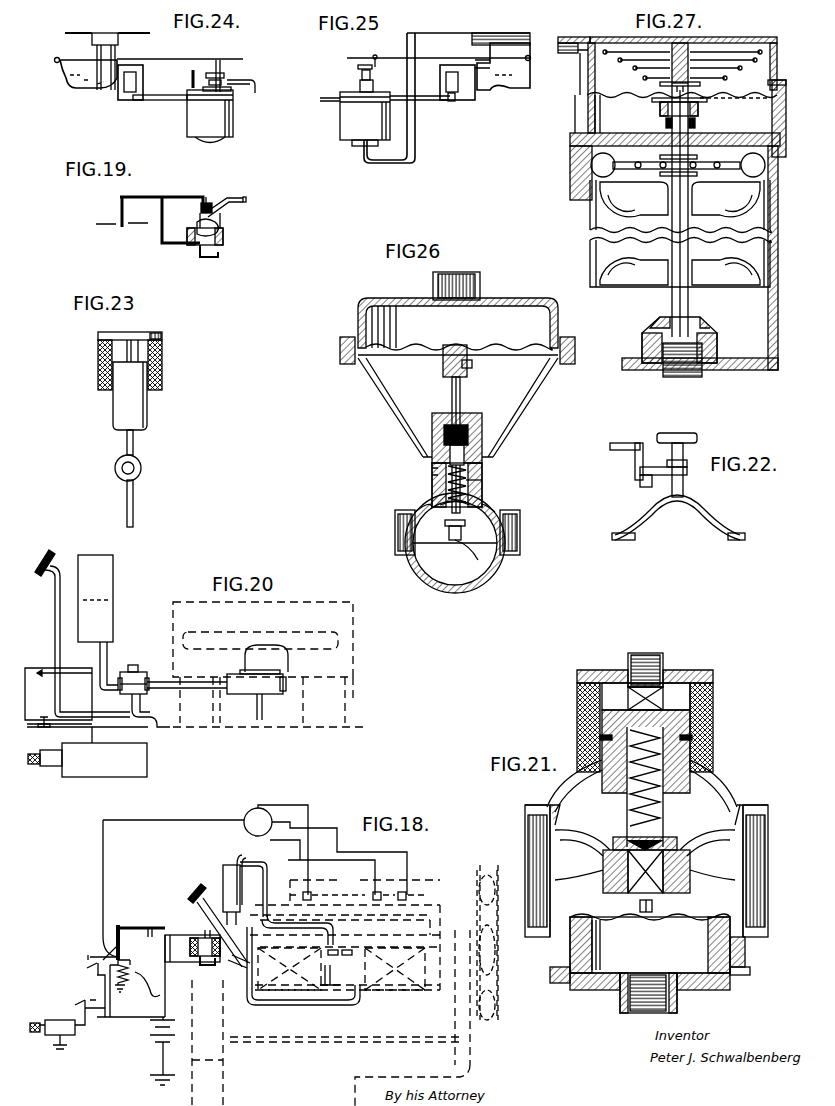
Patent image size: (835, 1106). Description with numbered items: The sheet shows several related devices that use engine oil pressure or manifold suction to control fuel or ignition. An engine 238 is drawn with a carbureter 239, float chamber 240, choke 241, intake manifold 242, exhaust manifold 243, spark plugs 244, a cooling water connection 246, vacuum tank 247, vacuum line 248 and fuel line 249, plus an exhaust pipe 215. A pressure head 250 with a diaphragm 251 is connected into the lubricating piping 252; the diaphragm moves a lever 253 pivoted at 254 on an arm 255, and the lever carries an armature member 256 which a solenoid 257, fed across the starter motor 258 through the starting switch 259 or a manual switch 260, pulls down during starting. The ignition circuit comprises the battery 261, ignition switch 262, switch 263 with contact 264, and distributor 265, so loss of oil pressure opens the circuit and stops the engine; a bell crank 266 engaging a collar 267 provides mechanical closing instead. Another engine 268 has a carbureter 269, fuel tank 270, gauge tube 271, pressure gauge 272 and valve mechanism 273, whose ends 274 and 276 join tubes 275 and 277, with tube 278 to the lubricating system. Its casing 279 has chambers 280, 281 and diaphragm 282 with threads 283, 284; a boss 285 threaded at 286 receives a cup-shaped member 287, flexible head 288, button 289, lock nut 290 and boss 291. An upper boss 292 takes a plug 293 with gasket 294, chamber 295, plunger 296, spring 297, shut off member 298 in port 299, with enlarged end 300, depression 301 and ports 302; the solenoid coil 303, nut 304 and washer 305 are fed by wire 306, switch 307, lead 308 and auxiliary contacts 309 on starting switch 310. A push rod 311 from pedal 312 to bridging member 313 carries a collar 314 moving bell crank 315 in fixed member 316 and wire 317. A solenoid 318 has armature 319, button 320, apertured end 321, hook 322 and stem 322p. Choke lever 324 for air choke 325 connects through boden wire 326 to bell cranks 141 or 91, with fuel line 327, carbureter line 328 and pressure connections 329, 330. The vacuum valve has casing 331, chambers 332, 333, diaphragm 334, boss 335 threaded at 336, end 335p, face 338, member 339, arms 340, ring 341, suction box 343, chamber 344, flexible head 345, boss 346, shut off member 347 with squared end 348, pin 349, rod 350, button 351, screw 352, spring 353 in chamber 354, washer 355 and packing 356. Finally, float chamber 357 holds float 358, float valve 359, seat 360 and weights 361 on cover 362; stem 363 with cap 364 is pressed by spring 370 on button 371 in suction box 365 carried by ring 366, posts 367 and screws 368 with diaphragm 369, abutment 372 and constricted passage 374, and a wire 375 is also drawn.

In FIG. 25, the bell crank 91 is at (378, 66).
In FIG. 24, the bell crank 141 is at (222, 68).
In FIG. 21, the exhaust pipe 215 is at (496, 865).
In FIG. 18, the exhaust pipe 215 is at (485, 940).
In FIG. 18, the engine 238 is at (331, 1005).
In FIG. 18, the carbureter 239 is at (333, 955).
In FIG. 18, the float chamber 240 is at (365, 975).
In FIG. 18, the choke 241 is at (327, 990).
In FIG. 18, the intake manifold 242 is at (395, 948).
In FIG. 18, the exhaust manifold 243 is at (345, 926).
In FIG. 18, the spark plugs 244 is at (312, 897).
In FIG. 18, the connection for the cooling water 246 is at (428, 865).
In FIG. 18, the vacuum tank 247 is at (225, 865).
In FIG. 18, the vacuum line 248 is at (240, 858).
In FIG. 18, the fuel line 249 is at (258, 1005).
In FIG. 19, the pressure head 250 is at (223, 240).
In FIG. 18, the pressure head 250 is at (200, 964).
In FIG. 19, the diaphragm 251 is at (198, 226).
In FIG. 18, the diaphragm 251 is at (205, 930).
In FIG. 18, the piping 252 is at (240, 968).
In FIG. 19, the lever 253 is at (188, 196).
In FIG. 18, the lever 253 is at (180, 935).
In FIG. 19, the pivot 254 is at (158, 196).
In FIG. 18, the pivot 254 is at (150, 928).
In FIG. 19, the arm 255 is at (162, 243).
In FIG. 18, the arm 255 is at (150, 928).
In FIG. 18, the contact carrying armature member 256 is at (107, 930).
In FIG. 18, the solenoid 257 is at (130, 985).
In FIG. 18, the starter motor 258 is at (75, 1030).
In FIG. 18, the starting switch 259 is at (75, 1005).
In FIG. 18, the manually controlled switch 260 is at (92, 970).
In FIG. 18, the battery 261 is at (150, 1043).
In FIG. 19, the ignition switch 262 is at (218, 257).
In FIG. 18, the ignition switch 262 is at (165, 1005).
In FIG. 18, the switch 263 is at (88, 956).
In FIG. 19, the contact 264 is at (118, 215).
In FIG. 18, the contact 264 is at (114, 935).
In FIG. 18, the distributor 265 is at (258, 808).
In FIG. 19, the bell crank 266 is at (232, 208).
In FIG. 19, the collar 267 is at (212, 203).
In FIG. 20, the engine 268 is at (270, 664).
In FIG. 20, the carbureter 269 is at (282, 670).
In FIG. 20, the fuel supply tank 270 is at (95, 598).
In FIG. 20, the tube 271 is at (158, 728).
In FIG. 20, the pressure gauge 272 is at (52, 552).
In FIG. 18, the pressure gauge 272 is at (200, 884).
In FIG. 20, the valve mechanism 273 is at (133, 668).
In FIG. 21, the valve mechanism 273 is at (750, 749).
In FIG. 21, the end 274 is at (535, 806).
In FIG. 20, the tube 275 is at (108, 652).
In FIG. 21, the end 276 is at (765, 806).
In FIG. 20, the tube 277 is at (180, 690).
In FIG. 20, the tube 278 is at (140, 702).
In FIG. 21, the casing 279 is at (705, 790).
In FIG. 21, the chamber 280 is at (645, 855).
In FIG. 21, the chamber 281 is at (720, 899).
In FIG. 21, the diaphragm 282 is at (600, 866).
In FIG. 21, the threads 283 is at (526, 830).
In FIG. 21, the threads 284 is at (750, 845).
In FIG. 21, the boss 285 is at (745, 950).
In FIG. 21, the internal threads 286 is at (745, 969).
In FIG. 21, the cup-shaped member 287 is at (690, 990).
In FIG. 21, the flexible head 288 is at (635, 918).
In FIG. 21, the button 289 is at (653, 906).
In FIG. 21, the lock nut 290 is at (552, 980).
In FIG. 21, the internally threaded boss 291 is at (625, 1005).
In FIG. 21, the internally threaded boss 292 is at (713, 735).
In FIG. 21, the plug 293 is at (713, 705).
In FIG. 21, the gasket 294 is at (600, 737).
In FIG. 21, the chamber 295 is at (577, 716).
In FIG. 21, the plunger 296 is at (668, 812).
In FIG. 21, the spring 297 is at (662, 826).
In FIG. 21, the shut off member 298 is at (668, 900).
In FIG. 21, the port 299 is at (625, 890).
In FIG. 21, the enlarged upper end 300 is at (657, 838).
In FIG. 21, the central depression 301 is at (640, 838).
In FIG. 21, the ports 302 is at (627, 812).
In FIG. 21, the solenoid coil 303 is at (713, 690).
In FIG. 21, the nut 304 is at (663, 660).
In FIG. 21, the washer 305 is at (690, 672).
In FIG. 20, the wire 306 is at (85, 670).
In FIG. 20, the switch 307 is at (42, 668).
In FIG. 20, the lead 308 is at (90, 702).
In FIG. 20, the auxiliary contacts 309 is at (40, 717).
In FIG. 20, the starting switch 310 is at (92, 727).
In FIG. 22, the push rod 311 is at (672, 490).
In FIG. 26, the pedal 312 is at (343, 337).
In FIG. 22, the pedal 312 is at (685, 437).
In FIG. 22, the bridging member 313 is at (652, 516).
In FIG. 22, the collar 314 is at (690, 470).
In FIG. 22, the bell crank lever 315 is at (640, 472).
In FIG. 22, the fixed member 316 is at (640, 485).
In FIG. 22, the push rod or wire 317 is at (616, 445).
In FIG. 23, the solenoid 318 is at (163, 365).
In FIG. 23, the armature 319 is at (148, 407).
In FIG. 23, the button 320 is at (150, 333).
In FIG. 23, the end 321 is at (135, 450).
In FIG. 23, the hook 322 is at (141, 468).
In FIG. 23, the stem 322p is at (135, 500).
In FIG. 24, the lever 324 is at (62, 68).
In FIG. 25, the lever 324 is at (528, 57).
In FIG. 24, the air choke 325 is at (85, 80).
In FIG. 25, the air choke 325 is at (503, 84).
In FIG. 24, the boden wire 326 is at (180, 59).
In FIG. 25, the boden wire 326 is at (460, 62).
In FIG. 24, the fuel supply line 327 is at (255, 92).
In FIG. 25, the fuel supply line 327 is at (329, 96).
In FIG. 24, the carbureter supply line 328 is at (158, 100).
In FIG. 25, the carbureter supply line 328 is at (430, 101).
In FIG. 24, the positive pressure or vacuum line connection 329 is at (191, 74).
In FIG. 25, the positive pressure or vacuum line connection 330 is at (417, 144).
In FIG. 26, the valve casing 331 is at (505, 560).
In FIG. 26, the chamber 332 is at (500, 512).
In FIG. 26, the chamber 333 is at (495, 567).
In FIG. 26, the diaphragm 334 is at (405, 512).
In FIG. 26, the boss 335 is at (490, 470).
In FIG. 26, the internally threaded end 335p is at (515, 548).
In FIG. 26, the threads 336 is at (432, 468).
In FIG. 26, the smoothened upper face 338 is at (488, 502).
In FIG. 26, the member 339 is at (472, 413).
In FIG. 26, the brackets or arms 340 is at (530, 395).
In FIG. 26, the upper ring 341 is at (340, 358).
In FIG. 26, the suction box 343 is at (515, 300).
In FIG. 26, the suction chamber 344 is at (427, 327).
In FIG. 26, the flexible head 345 is at (530, 337).
In FIG. 26, the threaded boss 346 is at (481, 281).
In FIG. 26, the shut off member 347 is at (455, 560).
In FIG. 26, the squared lower end 348 is at (470, 550).
In FIG. 26, the pin 349 is at (435, 506).
In FIG. 26, the rod 350 is at (452, 396).
In FIG. 26, the apertured button 351 is at (443, 368).
In FIG. 26, the locking screw 352 is at (472, 366).
In FIG. 26, the spring 353 is at (485, 488).
In FIG. 26, the chamber 354 is at (448, 480).
In FIG. 26, the washer 355 is at (445, 437).
In FIG. 26, the packing 356 is at (500, 431).
In FIG. 27, the float chamber 357 is at (740, 370).
In FIG. 26, the float chamber 357 is at (440, 545).
In FIG. 27, the float 358 is at (760, 272).
In FIG. 27, the float valve 359 is at (672, 320).
In FIG. 27, the valve seat 360 is at (717, 343).
In FIG. 27, the balance weights 361 is at (598, 172).
In FIG. 27, the cover 362 is at (570, 140).
In FIG. 27, the stem 363 is at (665, 128).
In FIG. 27, the cap 364 is at (700, 108).
In FIG. 27, the suction box 365 is at (617, 37).
In FIG. 27, the ring 366 is at (580, 98).
In FIG. 27, the posts 367 is at (576, 118).
In FIG. 27, the screws 368 is at (779, 80).
In FIG. 27, the diaphragm 369 is at (640, 104).
In FIG. 27, the spring 370 is at (730, 66).
In FIG. 27, the button 371 is at (695, 92).
In FIG. 27, the abutment 372 is at (660, 68).
In FIG. 27, the constricted air passage 374 is at (580, 60).
In FIG. 27, the wire 375 is at (560, 38).